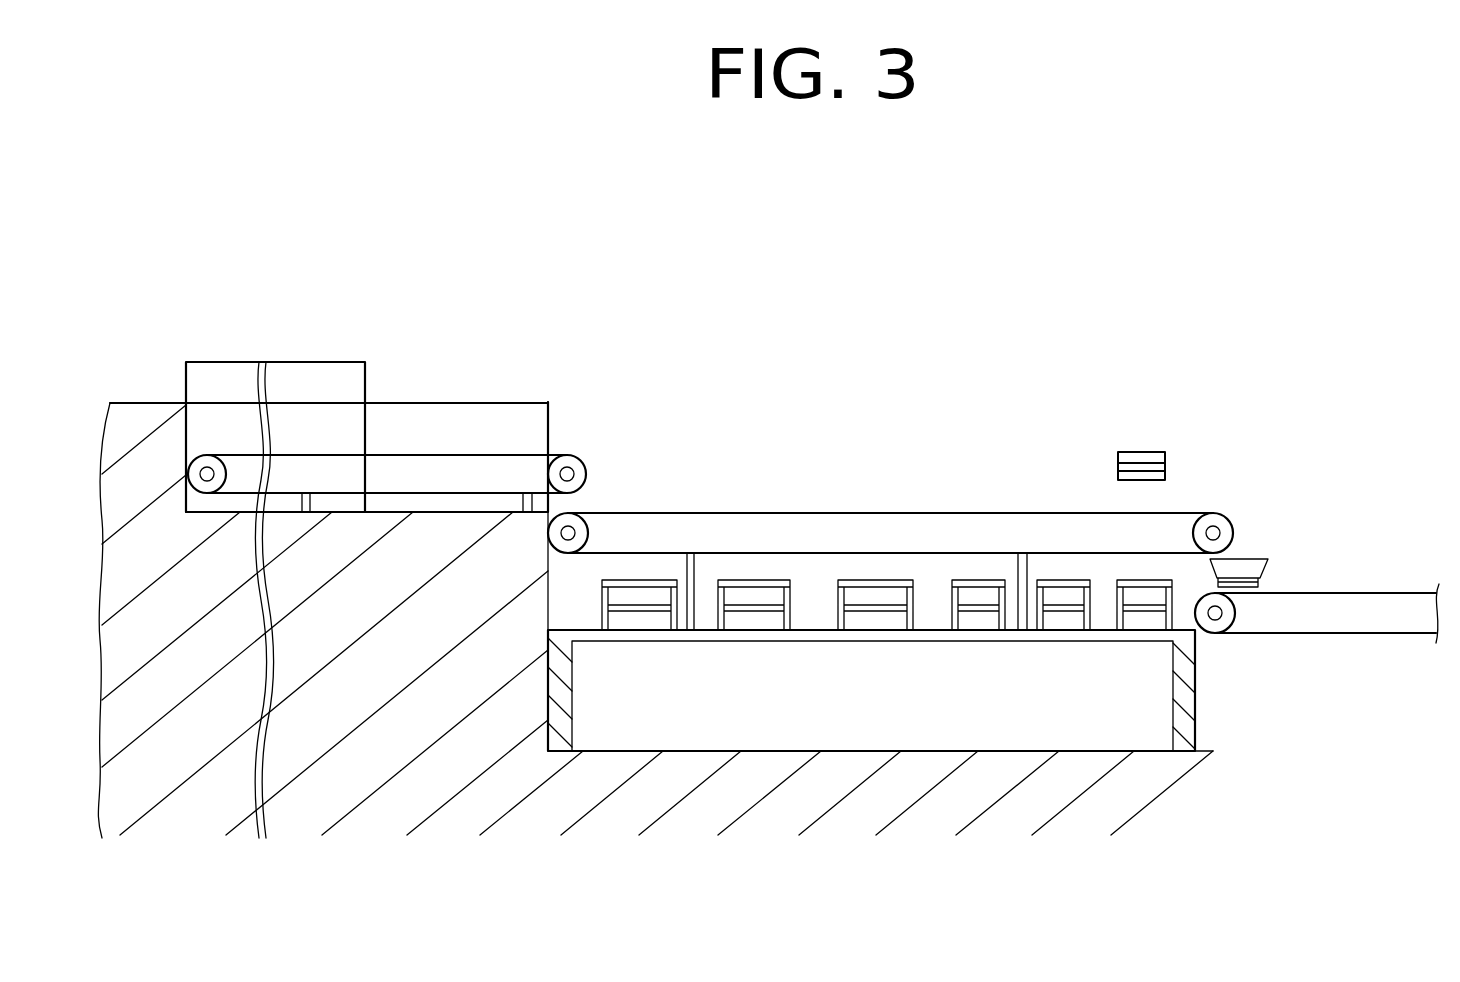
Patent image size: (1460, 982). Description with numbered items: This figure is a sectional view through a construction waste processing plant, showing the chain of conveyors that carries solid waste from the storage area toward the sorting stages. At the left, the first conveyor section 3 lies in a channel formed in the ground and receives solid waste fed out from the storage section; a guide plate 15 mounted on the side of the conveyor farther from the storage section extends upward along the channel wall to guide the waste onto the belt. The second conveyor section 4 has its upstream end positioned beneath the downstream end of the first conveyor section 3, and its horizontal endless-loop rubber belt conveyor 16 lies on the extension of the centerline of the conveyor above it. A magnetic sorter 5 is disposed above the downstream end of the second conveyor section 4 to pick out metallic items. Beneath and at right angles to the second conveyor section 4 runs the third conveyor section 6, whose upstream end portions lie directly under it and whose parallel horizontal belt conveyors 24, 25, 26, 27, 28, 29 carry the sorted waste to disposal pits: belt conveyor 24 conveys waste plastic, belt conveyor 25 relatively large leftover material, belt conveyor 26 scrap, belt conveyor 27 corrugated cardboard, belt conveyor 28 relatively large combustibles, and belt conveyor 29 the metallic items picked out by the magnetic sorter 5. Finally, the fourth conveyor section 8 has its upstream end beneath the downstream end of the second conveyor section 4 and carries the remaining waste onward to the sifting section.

The first conveyor section 3 is at (510, 432).
The second conveyor section 4 is at (890, 557).
The magnetic sorter 5 is at (1142, 433).
The third conveyor section 6 is at (880, 668).
The fourth conveyor section 8 is at (1382, 572).
The guide plate 15 is at (367, 365).
The belt conveyor 16 is at (798, 508).
The belt conveyor 24 is at (645, 608).
The belt conveyor 25 is at (757, 608).
The belt conveyor 26 is at (876, 608).
The belt conveyor 27 is at (983, 608).
The belt conveyor 28 is at (1062, 608).
The belt conveyor 29 is at (1140, 646).